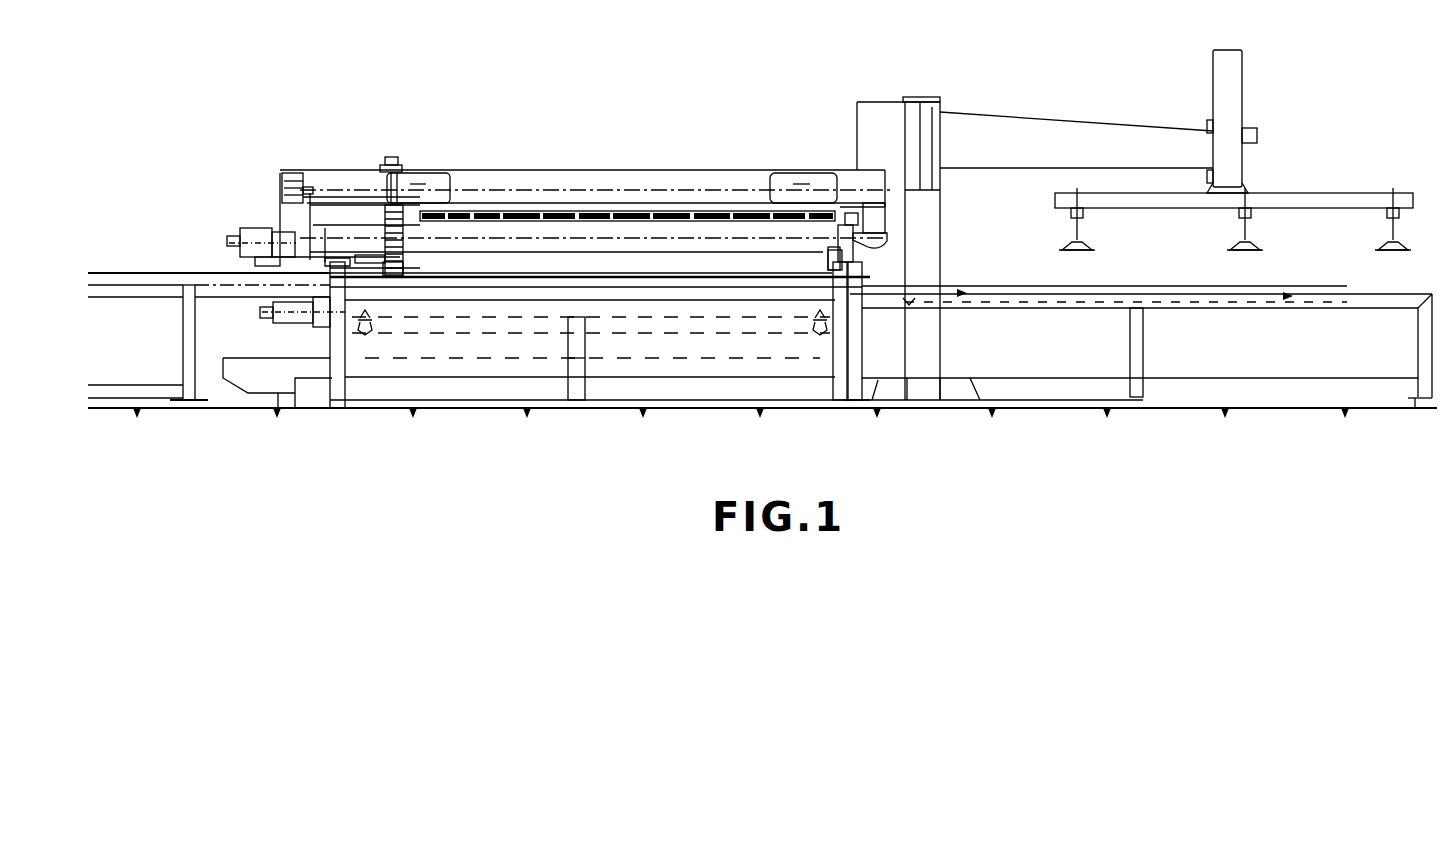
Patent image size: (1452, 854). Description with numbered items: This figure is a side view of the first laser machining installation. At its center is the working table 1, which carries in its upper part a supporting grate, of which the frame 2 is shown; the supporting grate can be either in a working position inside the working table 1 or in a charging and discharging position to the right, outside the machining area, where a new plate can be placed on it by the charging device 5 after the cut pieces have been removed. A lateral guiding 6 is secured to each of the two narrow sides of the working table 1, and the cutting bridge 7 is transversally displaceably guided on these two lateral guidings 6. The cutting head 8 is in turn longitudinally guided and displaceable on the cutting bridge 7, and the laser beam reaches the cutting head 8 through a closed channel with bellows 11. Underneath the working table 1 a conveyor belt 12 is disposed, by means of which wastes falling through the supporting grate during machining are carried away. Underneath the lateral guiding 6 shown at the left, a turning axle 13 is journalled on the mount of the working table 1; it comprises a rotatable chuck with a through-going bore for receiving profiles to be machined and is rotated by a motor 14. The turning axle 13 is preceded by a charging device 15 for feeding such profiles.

The working table 1 is at (432, 422).
The frame of supporting grate 2 is at (1306, 296).
The charging device 5 is at (1073, 88).
The lateral guiding 6 is at (402, 270).
The cutting bridge 7 is at (623, 228).
The cutting head 8 is at (384, 213).
The bellows 11 is at (525, 180).
The conveyor belt 12 is at (268, 382).
The turning axle 13 is at (313, 265).
The motor 14 is at (290, 316).
The charging device 15 is at (122, 270).